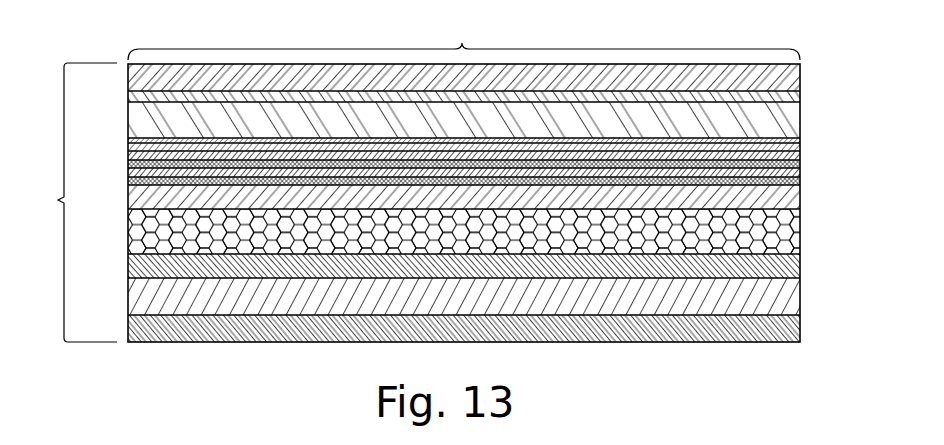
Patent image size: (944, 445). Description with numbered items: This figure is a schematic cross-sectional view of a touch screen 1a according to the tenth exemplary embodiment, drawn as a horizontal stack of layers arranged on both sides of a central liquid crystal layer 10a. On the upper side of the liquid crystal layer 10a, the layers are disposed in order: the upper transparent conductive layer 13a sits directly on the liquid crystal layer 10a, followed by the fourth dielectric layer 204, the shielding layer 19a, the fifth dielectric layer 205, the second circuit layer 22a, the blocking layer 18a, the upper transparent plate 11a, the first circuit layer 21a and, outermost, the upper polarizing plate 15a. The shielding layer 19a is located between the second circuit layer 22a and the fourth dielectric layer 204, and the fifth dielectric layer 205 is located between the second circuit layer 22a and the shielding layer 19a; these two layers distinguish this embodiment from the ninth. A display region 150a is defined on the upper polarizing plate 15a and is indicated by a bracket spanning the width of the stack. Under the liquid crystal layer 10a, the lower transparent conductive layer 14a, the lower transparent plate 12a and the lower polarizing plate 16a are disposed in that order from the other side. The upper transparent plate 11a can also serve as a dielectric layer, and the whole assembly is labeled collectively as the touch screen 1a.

The touch screen 1a is at (75, 202).
The display region 150a is at (464, 39).
The upper polarizing plate 15a is at (167, 80).
The first circuit layer 21a is at (802, 93).
The upper transparent plate 11a is at (163, 122).
The blocking layer 18a is at (800, 140).
The second circuit layer 22a is at (800, 150).
The fifth dielectric layer 205 is at (802, 160).
The shielding layer 19a is at (802, 175).
The fourth dielectric layer 204 is at (802, 185).
The upper transparent conductive layer 13a is at (167, 197).
The liquid crystal layer 10a is at (163, 230).
The lower transparent conductive layer 14a is at (153, 268).
The lower transparent plate 12a is at (153, 297).
The lower polarizing plate 16a is at (157, 327).